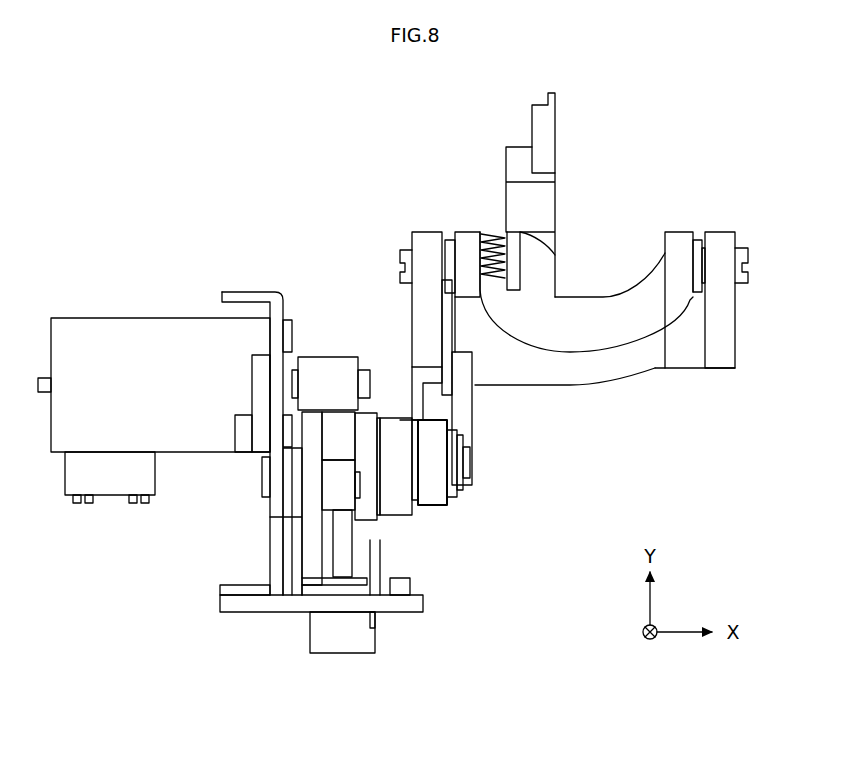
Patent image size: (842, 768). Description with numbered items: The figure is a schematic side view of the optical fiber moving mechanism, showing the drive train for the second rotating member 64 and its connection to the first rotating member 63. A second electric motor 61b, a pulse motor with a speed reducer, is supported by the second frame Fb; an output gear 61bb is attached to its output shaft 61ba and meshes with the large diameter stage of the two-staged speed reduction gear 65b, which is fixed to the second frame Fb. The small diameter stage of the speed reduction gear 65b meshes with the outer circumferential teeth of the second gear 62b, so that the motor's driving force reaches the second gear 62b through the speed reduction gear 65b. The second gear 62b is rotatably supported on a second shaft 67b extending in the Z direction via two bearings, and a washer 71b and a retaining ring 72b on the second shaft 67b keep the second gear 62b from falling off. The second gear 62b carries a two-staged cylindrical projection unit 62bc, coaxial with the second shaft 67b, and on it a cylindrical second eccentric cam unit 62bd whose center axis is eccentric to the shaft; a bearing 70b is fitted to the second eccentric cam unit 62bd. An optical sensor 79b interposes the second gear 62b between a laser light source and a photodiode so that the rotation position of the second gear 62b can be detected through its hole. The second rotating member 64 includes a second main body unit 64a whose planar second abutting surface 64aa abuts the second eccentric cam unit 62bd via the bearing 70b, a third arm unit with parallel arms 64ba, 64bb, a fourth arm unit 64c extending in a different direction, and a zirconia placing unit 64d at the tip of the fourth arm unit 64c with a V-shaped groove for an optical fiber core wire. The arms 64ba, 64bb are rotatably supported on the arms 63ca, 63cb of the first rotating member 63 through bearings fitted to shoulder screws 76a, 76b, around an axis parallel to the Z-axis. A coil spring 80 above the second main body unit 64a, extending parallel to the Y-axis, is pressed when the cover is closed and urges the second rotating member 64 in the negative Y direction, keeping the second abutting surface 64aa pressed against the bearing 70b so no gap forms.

The second electric motor 61b is at (96, 315).
The second frame Fb is at (243, 292).
The output gear 61bb is at (318, 357).
The output shaft 61ba is at (372, 380).
The speed reduction gear 65b is at (293, 556).
The second gear 62b is at (360, 534).
The second eccentric cam unit 62bd is at (416, 512).
The projection unit 62bc is at (398, 408).
The optical sensor 79b is at (381, 557).
The bearing 70b is at (432, 507).
The washer 71b is at (457, 495).
The retaining ring 72b is at (462, 490).
The second shaft 67b is at (471, 470).
The second abutting surface 64aa is at (466, 421).
The arm 63cb is at (426, 232).
The shoulder screw 76b is at (400, 262).
The arm 64bb is at (468, 232).
The coil spring 80 is at (488, 232).
The placing unit 64d is at (555, 135).
The fourth arm unit 64c is at (555, 200).
The second main body unit 64a is at (476, 383).
The arm 64ba is at (670, 232).
The arm 63ca is at (721, 232).
The shoulder screw 76a is at (748, 268).
The second rotating member 64 is at (629, 229).
The first rotating member 63 is at (740, 374).